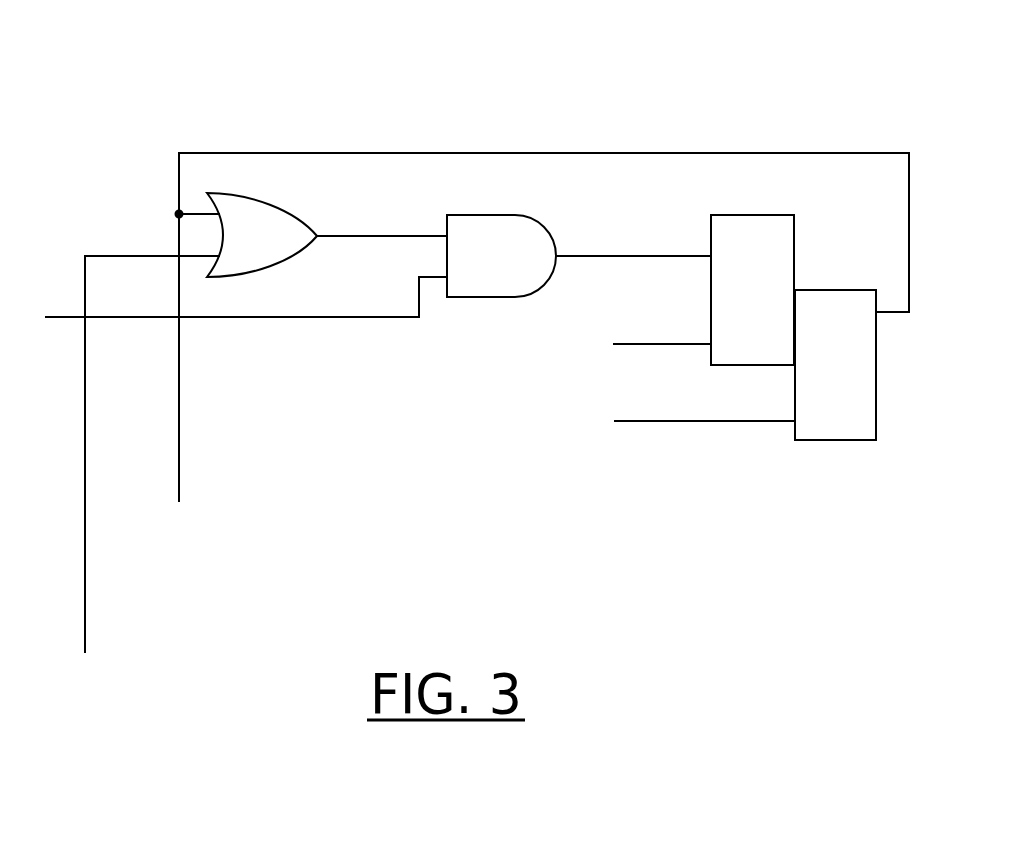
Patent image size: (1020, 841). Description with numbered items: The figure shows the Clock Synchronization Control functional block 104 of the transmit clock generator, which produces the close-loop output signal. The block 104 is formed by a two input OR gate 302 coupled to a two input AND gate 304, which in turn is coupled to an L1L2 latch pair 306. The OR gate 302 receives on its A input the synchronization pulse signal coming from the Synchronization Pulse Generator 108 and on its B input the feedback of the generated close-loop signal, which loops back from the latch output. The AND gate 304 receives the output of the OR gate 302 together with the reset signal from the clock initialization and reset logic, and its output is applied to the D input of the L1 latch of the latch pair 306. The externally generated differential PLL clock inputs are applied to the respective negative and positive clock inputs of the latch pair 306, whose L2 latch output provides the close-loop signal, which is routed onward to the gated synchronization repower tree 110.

The Clock Synchronization Control functional block 104 is at (568, 76).
The two input OR gate 302 is at (262, 235).
The two input AND gate 304 is at (501, 256).
The L1L2 latch pair 306 is at (793, 315).
The Synchronization Pulse Generator 108 is at (160, 709).
The gated synchronization repower tree 110 is at (323, 550).